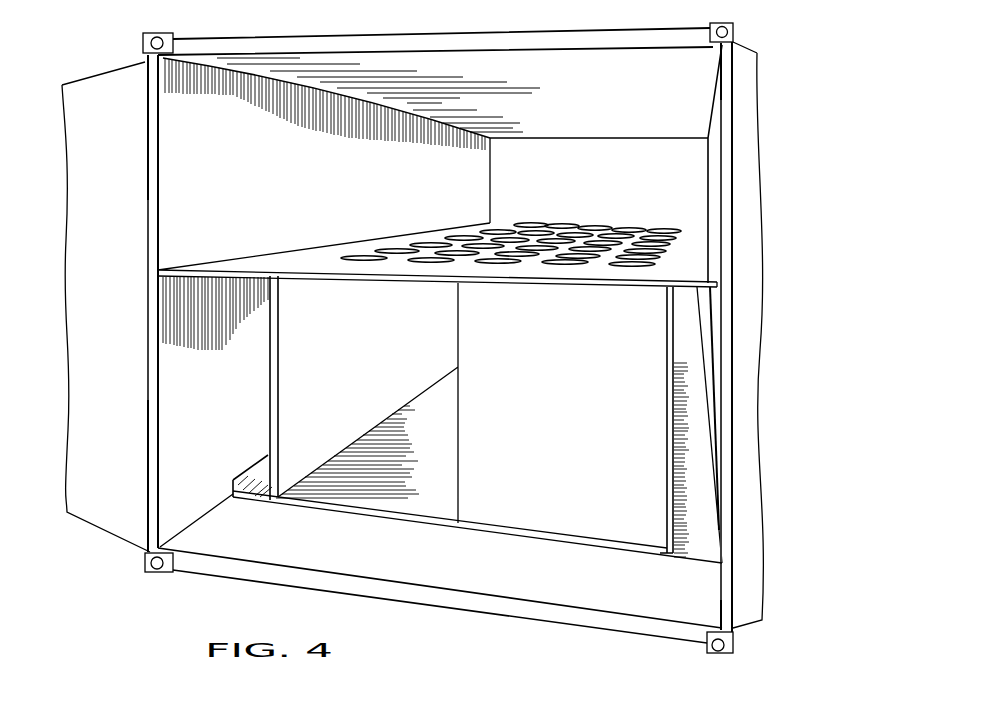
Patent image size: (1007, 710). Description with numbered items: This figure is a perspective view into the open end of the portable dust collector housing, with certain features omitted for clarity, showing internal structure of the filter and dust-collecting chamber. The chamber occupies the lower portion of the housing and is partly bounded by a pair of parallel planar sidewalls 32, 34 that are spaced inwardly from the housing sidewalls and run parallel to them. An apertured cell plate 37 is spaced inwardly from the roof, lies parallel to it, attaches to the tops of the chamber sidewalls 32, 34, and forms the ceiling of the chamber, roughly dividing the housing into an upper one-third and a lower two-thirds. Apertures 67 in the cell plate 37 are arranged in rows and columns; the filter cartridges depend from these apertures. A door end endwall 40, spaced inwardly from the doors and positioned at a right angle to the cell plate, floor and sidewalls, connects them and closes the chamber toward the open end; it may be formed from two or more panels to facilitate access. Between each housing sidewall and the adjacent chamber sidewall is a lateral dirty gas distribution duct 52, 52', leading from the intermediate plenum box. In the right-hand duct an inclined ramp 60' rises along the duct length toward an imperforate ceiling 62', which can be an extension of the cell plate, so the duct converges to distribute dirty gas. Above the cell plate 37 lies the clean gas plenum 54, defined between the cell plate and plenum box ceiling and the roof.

The filter chamber sidewall 32 is at (287, 410).
The filter chamber sidewall 34 is at (672, 434).
The apertured cell plate 37 is at (687, 262).
The door end endwall 40 is at (535, 468).
The lateral dirty gas distribution duct 52 is at (180, 335).
The lateral dirty gas distribution duct 52' is at (761, 350).
The clean gas plenum 54 is at (692, 174).
The inclined ramp 60' is at (441, 543).
The imperforate ceiling 62' is at (744, 424).
The apertures 67 is at (620, 240).